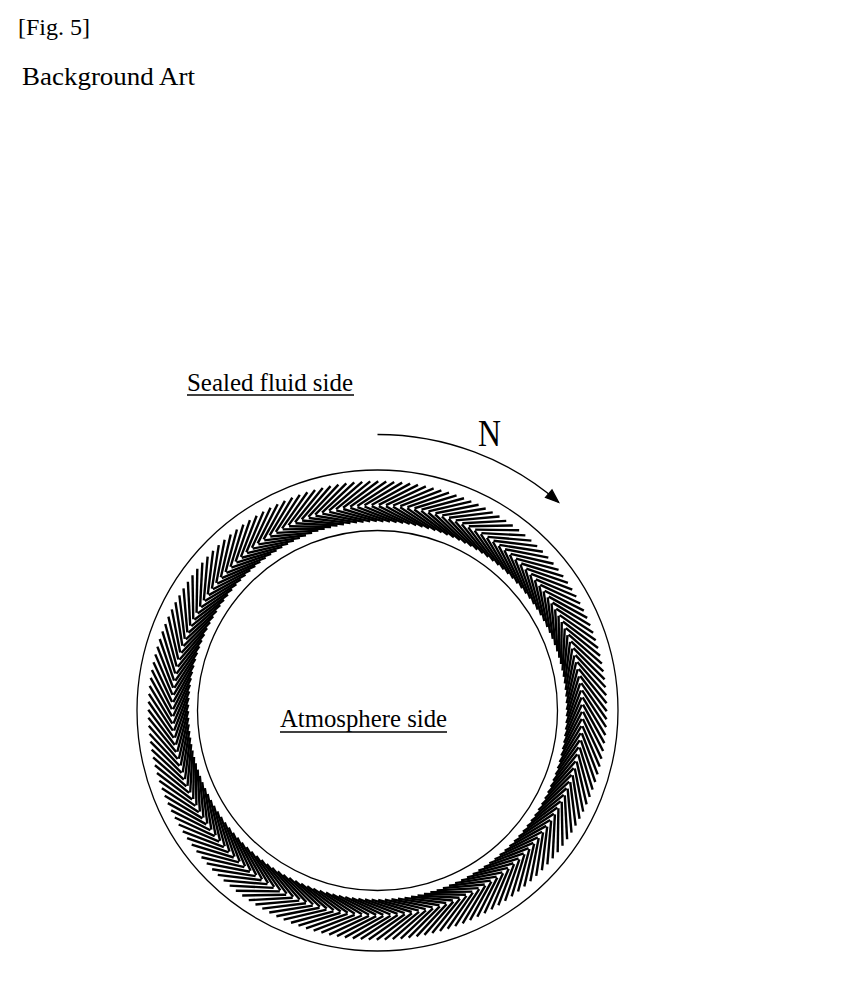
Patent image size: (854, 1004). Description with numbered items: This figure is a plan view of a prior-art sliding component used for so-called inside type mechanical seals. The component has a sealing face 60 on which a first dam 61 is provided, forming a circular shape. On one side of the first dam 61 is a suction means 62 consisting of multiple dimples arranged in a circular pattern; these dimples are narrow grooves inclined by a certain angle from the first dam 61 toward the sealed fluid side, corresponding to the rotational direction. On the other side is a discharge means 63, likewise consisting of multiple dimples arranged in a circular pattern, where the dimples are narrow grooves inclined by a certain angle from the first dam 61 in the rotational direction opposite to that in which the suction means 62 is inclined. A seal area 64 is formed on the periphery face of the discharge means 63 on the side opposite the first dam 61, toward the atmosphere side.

The sealing face 60 is at (435, 695).
The first dam 61 is at (580, 613).
The suction means 62 is at (600, 698).
The discharge means 63 is at (580, 584).
The seal area 64 is at (545, 647).